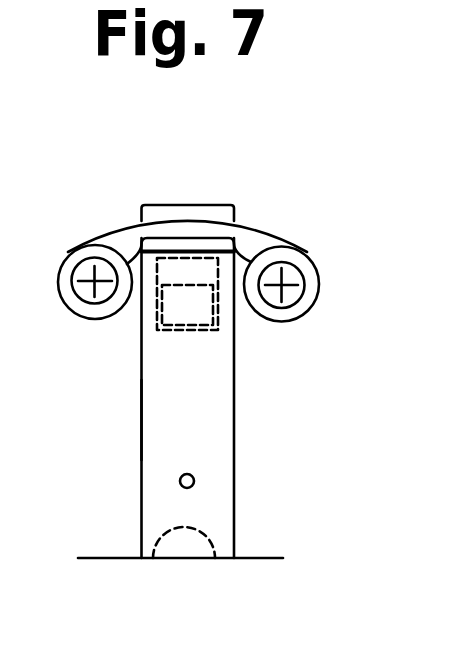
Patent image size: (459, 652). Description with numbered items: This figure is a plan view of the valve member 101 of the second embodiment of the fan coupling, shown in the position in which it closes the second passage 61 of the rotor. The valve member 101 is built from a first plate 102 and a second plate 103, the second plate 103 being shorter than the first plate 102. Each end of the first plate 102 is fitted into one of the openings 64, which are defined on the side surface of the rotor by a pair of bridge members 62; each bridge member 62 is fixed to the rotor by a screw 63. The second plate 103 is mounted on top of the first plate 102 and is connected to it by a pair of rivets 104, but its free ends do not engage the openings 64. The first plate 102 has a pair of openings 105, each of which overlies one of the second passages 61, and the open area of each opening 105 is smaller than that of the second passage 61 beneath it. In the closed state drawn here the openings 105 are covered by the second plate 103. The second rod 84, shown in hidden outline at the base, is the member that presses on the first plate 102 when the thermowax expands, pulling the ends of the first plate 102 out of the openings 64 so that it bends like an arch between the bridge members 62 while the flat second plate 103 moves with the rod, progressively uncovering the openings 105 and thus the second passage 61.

The second passage 61 is at (183, 258).
The bridge member 62 is at (254, 240).
The screw 63 is at (295, 276).
The opening 64 is at (119, 221).
The second rod 84 is at (180, 538).
The valve member 101 is at (237, 421).
The first plate 102 is at (215, 212).
The second plate 103 is at (165, 410).
The rivet 104 is at (195, 481).
The opening 105 is at (172, 308).